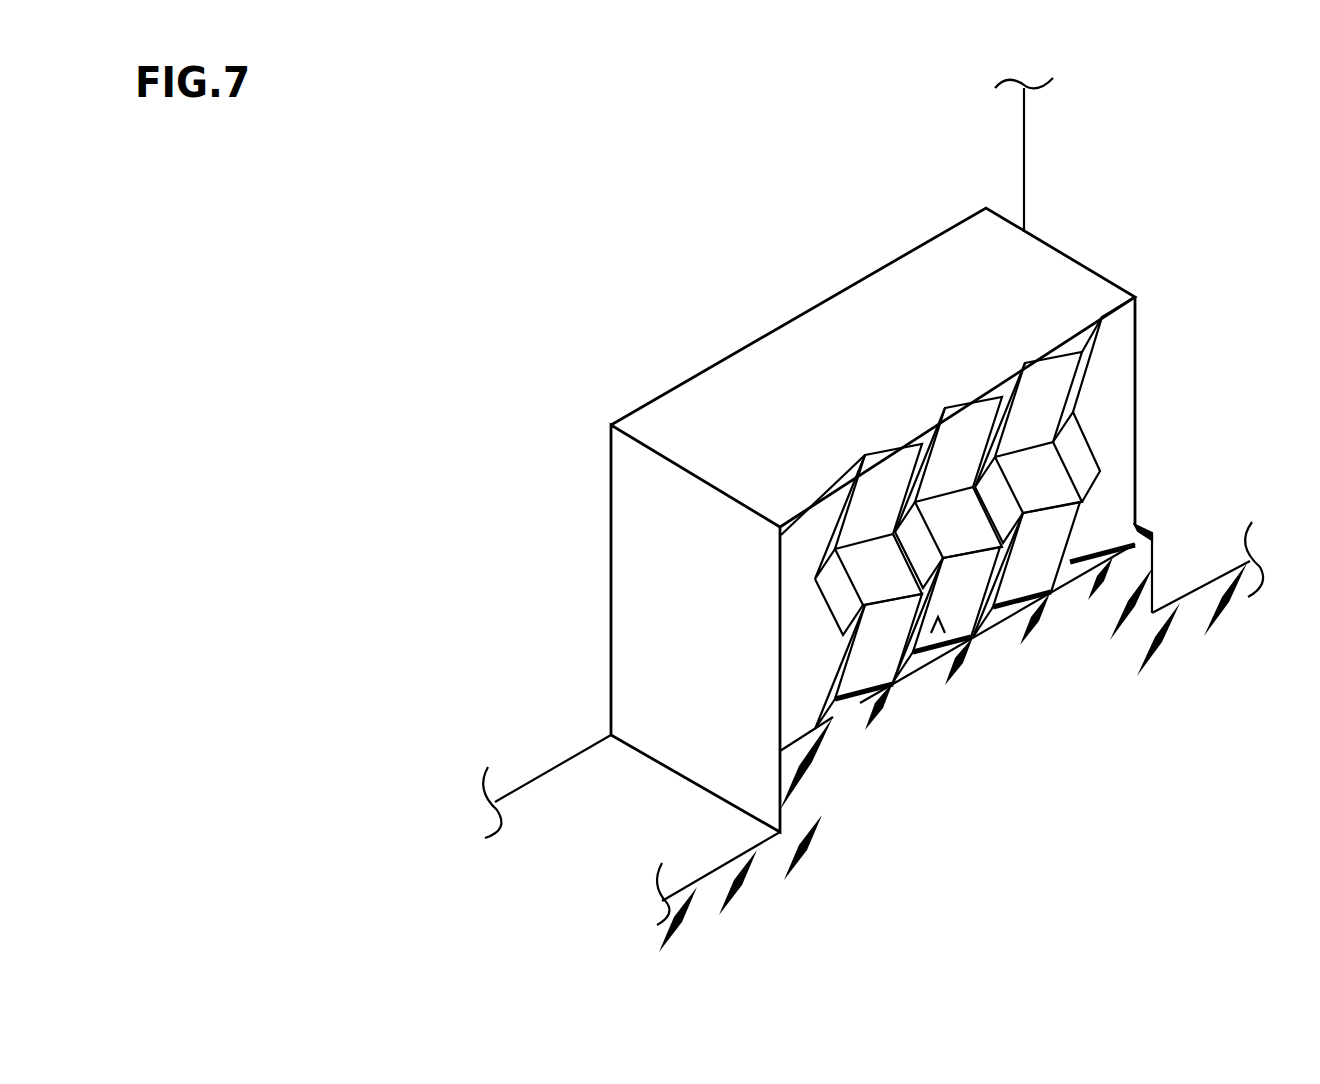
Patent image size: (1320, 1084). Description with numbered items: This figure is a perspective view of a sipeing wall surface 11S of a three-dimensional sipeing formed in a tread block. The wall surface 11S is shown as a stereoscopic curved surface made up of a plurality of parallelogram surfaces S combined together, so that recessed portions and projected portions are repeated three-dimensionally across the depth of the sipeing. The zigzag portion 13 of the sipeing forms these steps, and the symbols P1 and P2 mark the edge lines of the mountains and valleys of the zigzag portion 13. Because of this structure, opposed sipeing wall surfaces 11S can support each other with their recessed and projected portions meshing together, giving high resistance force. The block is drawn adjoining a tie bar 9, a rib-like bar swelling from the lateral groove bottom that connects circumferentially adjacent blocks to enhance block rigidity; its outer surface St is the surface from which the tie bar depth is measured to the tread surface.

The tie bar 9 is at (1070, 289).
The outer surface of the tie bar St is at (1015, 262).
The zigzag portion 13 is at (897, 447).
The edge line of mountains of the zigzag portion P1 is at (835, 548).
The edge line of valleys of the zigzag portion P2 is at (832, 603).
The sipeing wall surface 11S is at (938, 620).
The parallelogram surface S is at (962, 612).